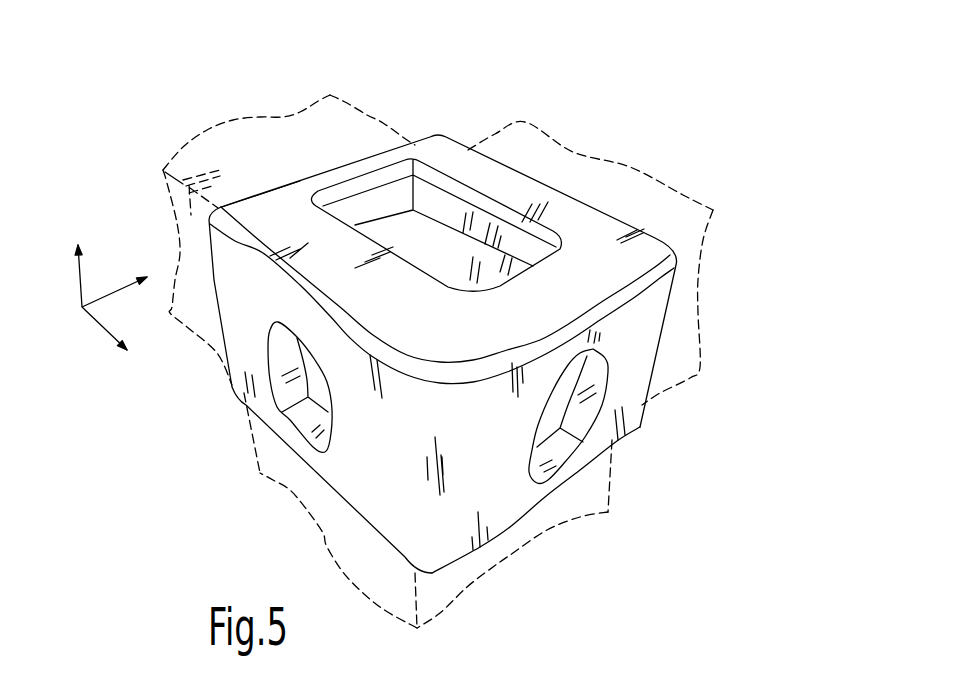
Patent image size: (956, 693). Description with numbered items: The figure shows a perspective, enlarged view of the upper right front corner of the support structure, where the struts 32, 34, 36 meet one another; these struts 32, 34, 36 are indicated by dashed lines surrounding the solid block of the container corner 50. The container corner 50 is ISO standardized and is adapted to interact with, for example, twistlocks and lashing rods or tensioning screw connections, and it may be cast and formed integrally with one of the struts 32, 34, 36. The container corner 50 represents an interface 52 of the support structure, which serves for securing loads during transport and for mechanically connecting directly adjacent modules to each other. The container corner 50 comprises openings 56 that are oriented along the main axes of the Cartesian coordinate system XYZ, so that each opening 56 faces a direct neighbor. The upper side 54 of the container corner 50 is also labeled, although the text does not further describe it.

The container corner 50 is at (575, 95).
The strut 32 is at (634, 167).
The strut 34 is at (370, 117).
The strut 36 is at (613, 466).
The interface 52 is at (183, 380).
The top side of block 54 is at (257, 195).
The opening 56 is at (423, 243).